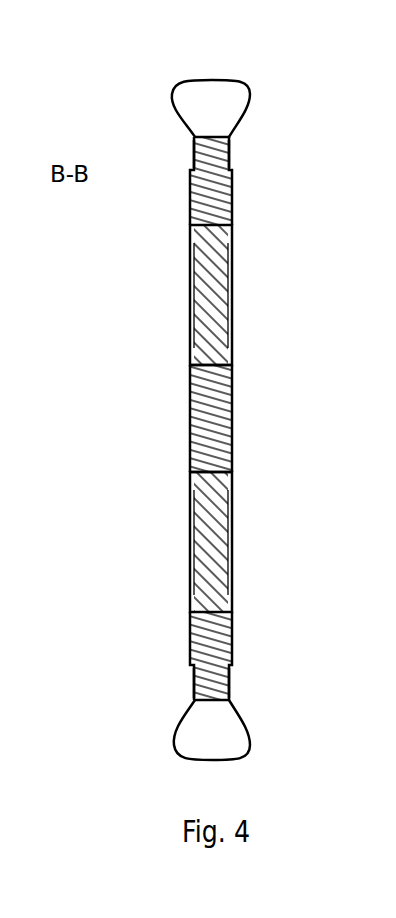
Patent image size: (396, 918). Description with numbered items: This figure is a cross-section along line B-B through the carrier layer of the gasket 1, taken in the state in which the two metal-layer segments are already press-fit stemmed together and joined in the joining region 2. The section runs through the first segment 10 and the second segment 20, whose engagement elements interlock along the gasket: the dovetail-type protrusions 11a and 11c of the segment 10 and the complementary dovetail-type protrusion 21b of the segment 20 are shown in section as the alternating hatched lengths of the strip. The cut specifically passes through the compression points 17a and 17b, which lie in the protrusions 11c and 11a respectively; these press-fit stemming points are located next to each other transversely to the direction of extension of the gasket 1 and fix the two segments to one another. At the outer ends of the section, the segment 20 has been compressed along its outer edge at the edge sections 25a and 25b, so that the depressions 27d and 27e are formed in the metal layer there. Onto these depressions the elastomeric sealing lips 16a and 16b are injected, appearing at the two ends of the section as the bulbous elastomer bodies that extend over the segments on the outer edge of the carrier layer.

The gasket 1 is at (287, 275).
The joining region 2 is at (192, 418).
The first segment 10 is at (232, 233).
The engagement element 11a is at (233, 480).
The engagement element 11c is at (220, 360).
The elastomer injection 16a is at (217, 742).
The elastomer injection 16b is at (217, 87).
The compression point 17a is at (190, 282).
The compression point 17b is at (188, 538).
The second segment 20 is at (200, 418).
The engagement element 21b is at (192, 424).
The edge section 25a is at (188, 710).
The edge section 25b is at (213, 133).
The depression 27d is at (192, 683).
The depression 27e is at (195, 155).